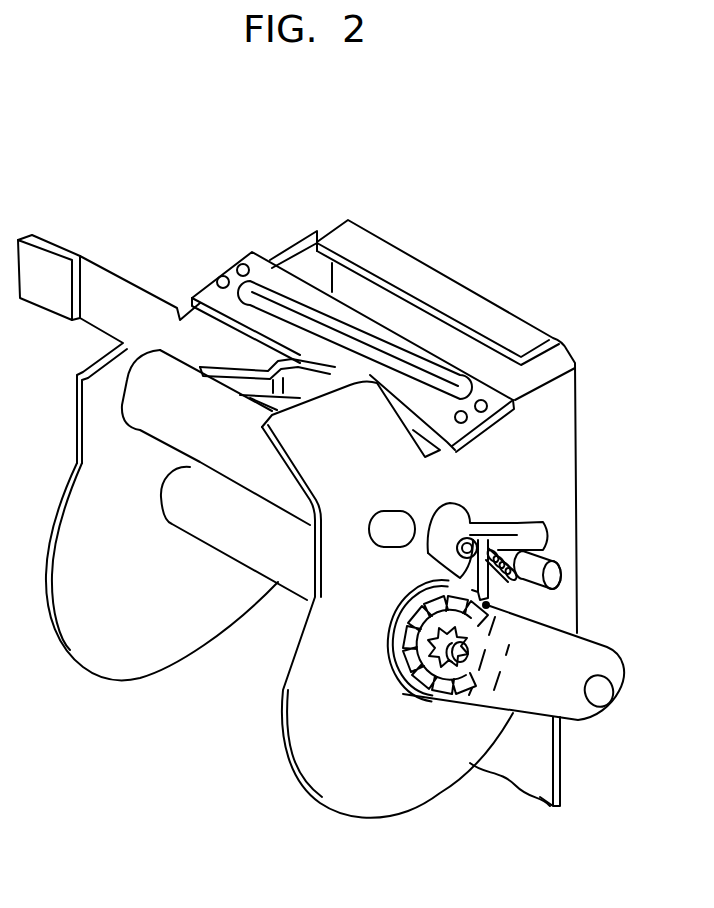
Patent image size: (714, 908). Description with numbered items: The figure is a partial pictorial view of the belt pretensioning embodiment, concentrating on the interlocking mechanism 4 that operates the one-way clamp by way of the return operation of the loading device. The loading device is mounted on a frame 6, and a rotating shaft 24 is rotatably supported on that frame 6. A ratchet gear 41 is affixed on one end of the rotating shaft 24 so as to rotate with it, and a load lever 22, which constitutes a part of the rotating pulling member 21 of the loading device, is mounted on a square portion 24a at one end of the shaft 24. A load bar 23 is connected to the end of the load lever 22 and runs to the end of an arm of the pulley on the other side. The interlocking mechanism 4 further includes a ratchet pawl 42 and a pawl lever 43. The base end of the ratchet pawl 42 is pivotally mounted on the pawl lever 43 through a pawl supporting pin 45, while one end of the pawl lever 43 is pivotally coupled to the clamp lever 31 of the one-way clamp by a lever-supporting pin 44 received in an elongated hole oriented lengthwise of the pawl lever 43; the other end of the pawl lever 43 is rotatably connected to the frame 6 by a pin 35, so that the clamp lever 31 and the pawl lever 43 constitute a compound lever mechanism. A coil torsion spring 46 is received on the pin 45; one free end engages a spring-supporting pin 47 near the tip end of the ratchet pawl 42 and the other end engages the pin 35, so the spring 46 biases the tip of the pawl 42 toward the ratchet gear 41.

The frame 6 is at (560, 426).
The clamp lever 31 is at (250, 383).
The rotating shaft 24 is at (288, 573).
The square portion 24a is at (403, 678).
The interlocking mechanism 4 is at (406, 664).
The ratchet gear 41 is at (445, 695).
The ratchet pawl 42 is at (440, 587).
The lever-supporting pin 44 is at (478, 527).
The pawl lever 43 is at (530, 540).
The pin 35 is at (563, 580).
The pawl supporting pin 45 is at (500, 588).
The coil torsion spring 46 is at (480, 533).
The spring-supporting pin 47 is at (490, 604).
The rotating pulling member 21 is at (593, 644).
The load lever 22 is at (571, 712).
The load bar 23 is at (603, 693).